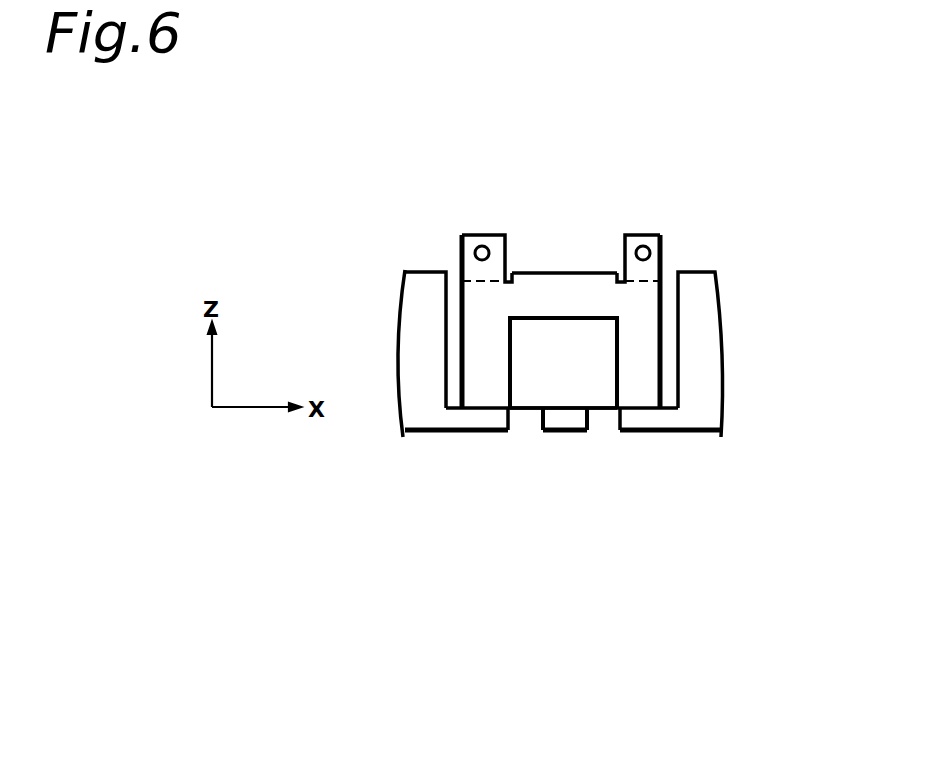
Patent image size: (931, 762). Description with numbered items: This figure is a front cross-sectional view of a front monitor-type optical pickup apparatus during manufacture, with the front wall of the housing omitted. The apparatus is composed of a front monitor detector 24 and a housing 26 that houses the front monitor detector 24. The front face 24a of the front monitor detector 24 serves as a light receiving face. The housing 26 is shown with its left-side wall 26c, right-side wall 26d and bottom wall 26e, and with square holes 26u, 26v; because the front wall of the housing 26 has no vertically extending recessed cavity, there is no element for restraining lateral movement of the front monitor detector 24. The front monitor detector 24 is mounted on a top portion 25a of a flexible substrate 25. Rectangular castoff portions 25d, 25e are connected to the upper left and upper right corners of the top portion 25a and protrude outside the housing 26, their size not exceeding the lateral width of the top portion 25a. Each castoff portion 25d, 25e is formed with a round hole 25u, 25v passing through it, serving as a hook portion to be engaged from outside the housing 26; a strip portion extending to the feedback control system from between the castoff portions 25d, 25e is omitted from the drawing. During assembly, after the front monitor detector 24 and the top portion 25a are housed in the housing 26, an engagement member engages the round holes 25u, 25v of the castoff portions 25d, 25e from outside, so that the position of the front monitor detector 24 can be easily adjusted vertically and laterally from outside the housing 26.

The front monitor detector 24 is at (616, 410).
The front face 24a is at (535, 390).
The flexible substrate 25 is at (544, 279).
The top portion 25a is at (527, 295).
The castoff portion 25d is at (466, 257).
The castoff portion 25e is at (666, 260).
The round hole 25u is at (483, 247).
The round hole 25v is at (643, 246).
The housing 26 is at (600, 501).
The left-side wall 26c is at (417, 340).
The right-side wall 26d is at (712, 332).
The bottom wall 26e is at (472, 433).
The square hole 26u is at (522, 418).
The square hole 26v is at (600, 427).